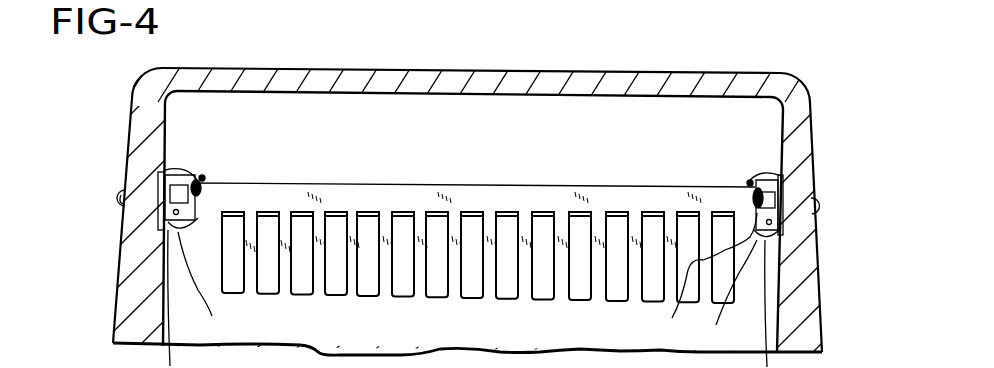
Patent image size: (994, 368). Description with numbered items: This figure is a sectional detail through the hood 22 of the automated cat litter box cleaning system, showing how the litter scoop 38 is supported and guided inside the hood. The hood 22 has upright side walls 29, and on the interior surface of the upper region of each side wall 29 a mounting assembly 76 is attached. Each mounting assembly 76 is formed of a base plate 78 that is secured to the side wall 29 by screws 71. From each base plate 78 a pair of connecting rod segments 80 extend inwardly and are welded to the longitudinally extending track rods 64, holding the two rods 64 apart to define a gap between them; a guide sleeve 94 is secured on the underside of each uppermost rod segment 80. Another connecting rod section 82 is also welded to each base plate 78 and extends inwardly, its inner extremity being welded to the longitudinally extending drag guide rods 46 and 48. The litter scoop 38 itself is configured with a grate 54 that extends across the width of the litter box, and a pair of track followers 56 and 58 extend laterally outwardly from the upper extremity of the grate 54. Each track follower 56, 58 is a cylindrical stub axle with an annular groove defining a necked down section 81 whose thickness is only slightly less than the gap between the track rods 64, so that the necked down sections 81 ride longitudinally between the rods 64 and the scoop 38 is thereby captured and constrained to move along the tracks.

The hood 22 is at (726, 72).
The side walls of the hood 29 is at (119, 281).
The litter scoop 38 is at (492, 185).
The drag guide rod 46 is at (203, 177).
The drag guide rod 48 is at (750, 183).
The grate 54 is at (483, 280).
The track follower 56 is at (200, 215).
The track follower 58 is at (698, 277).
The track rods 64 is at (200, 184).
The screws 71 is at (118, 194).
The mounting assembly 76 is at (173, 152).
The base plate 78 is at (165, 186).
The connecting rod segments 80 is at (157, 173).
The necked down section 81 is at (197, 183).
The connecting rod section 82 is at (160, 201).
The guide sleeve 94 is at (162, 172).